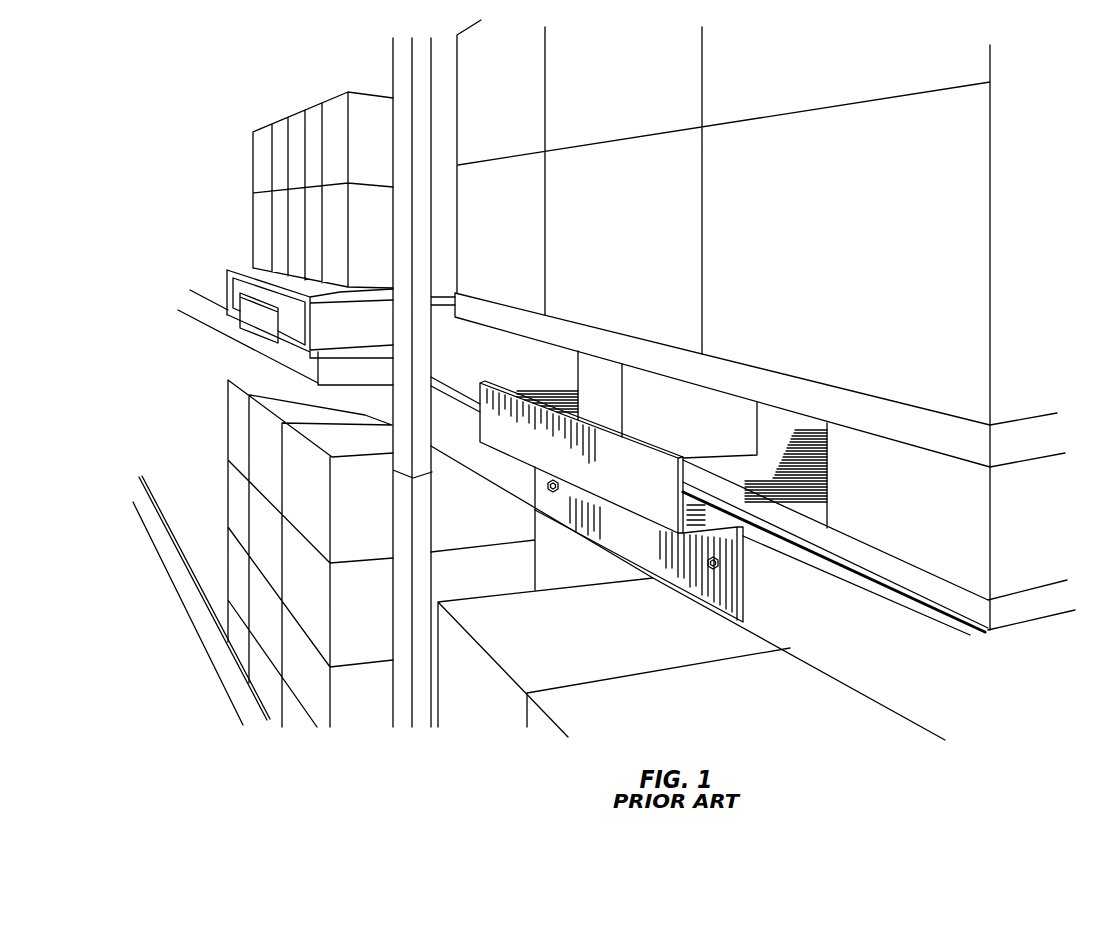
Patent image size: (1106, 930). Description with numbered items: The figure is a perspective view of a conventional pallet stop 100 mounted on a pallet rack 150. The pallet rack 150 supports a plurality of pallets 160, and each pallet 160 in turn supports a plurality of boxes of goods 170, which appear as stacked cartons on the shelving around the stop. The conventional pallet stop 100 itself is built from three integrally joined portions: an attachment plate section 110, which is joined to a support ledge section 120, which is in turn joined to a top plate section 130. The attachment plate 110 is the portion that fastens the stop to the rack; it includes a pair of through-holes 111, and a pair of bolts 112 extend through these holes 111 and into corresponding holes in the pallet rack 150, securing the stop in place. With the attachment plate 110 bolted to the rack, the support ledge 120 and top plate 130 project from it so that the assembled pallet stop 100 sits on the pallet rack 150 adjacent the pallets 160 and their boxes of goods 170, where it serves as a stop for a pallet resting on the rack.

The conventional pallet stop 100 is at (638, 555).
The attachment plate section 110 is at (649, 545).
The through-holes 111 is at (548, 481).
The bolts 112 is at (553, 492).
The support ledge section 120 is at (703, 517).
The top plate section 130 is at (647, 483).
The pallet rack 150 is at (889, 646).
The pallets 160 is at (365, 332).
The boxes of goods 170 is at (529, 240).